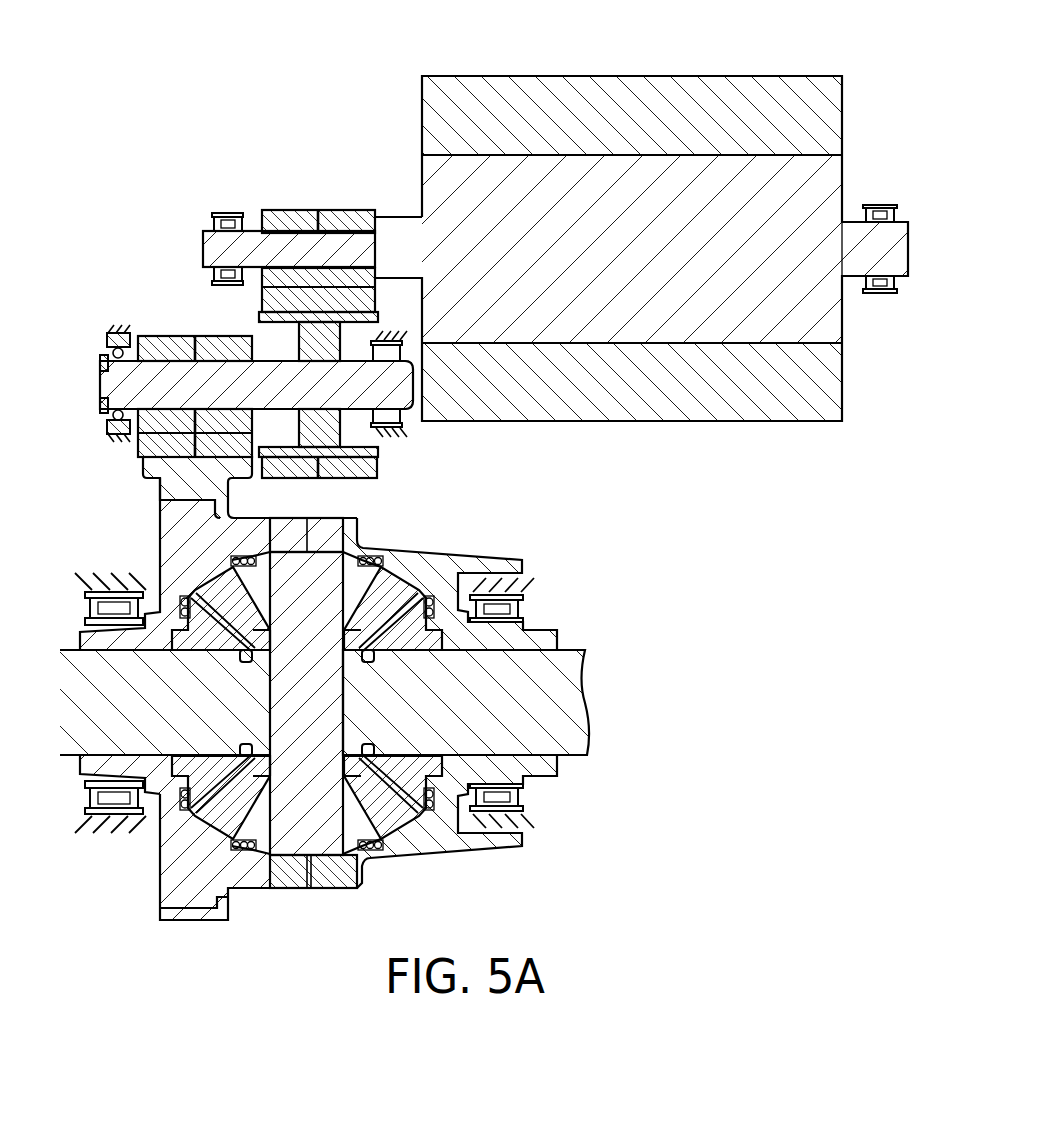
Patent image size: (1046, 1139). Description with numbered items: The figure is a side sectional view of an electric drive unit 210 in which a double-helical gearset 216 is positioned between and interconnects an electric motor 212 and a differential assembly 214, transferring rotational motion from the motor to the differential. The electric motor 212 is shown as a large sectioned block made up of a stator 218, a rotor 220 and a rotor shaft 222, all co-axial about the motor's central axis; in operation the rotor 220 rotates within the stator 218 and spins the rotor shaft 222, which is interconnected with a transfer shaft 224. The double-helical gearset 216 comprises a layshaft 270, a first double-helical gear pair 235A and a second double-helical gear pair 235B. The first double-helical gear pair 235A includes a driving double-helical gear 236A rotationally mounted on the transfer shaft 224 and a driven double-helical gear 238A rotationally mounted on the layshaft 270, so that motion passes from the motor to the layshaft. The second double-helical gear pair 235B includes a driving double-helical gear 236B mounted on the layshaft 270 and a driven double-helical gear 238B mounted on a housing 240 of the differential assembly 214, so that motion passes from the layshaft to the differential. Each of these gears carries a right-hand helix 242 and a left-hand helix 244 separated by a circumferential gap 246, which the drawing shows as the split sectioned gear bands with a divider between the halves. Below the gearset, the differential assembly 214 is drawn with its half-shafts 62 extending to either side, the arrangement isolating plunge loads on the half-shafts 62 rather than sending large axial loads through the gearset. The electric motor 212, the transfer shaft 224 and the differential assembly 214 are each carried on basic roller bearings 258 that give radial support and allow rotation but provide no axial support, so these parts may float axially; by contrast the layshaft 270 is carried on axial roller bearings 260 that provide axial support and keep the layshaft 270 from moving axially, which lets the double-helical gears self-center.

The half-shafts 62 is at (125, 735).
The electric drive unit 210 is at (780, 765).
The electric motor 212 is at (650, 425).
The differential assembly 214 is at (366, 885).
The double-helical gearset 216 is at (88, 386).
The stator 218 is at (608, 98).
The rotor 220 is at (838, 186).
The rotor shaft 222 is at (292, 247).
The transfer shaft 224 is at (292, 247).
The first double-helical gear pair 235A is at (327, 200).
The second double-helical gear pair 235B is at (206, 328).
The driving double-helical gear 236A is at (340, 222).
The driving double-helical gear 236B is at (240, 290).
The driven double-helical gear 238A is at (367, 477).
The driven double-helical gear 238B is at (140, 446).
The housing 240 is at (180, 538).
The right-hand helix 242 is at (357, 222).
The left-hand helix 244 is at (293, 222).
The gap 246 is at (316, 220).
The basic roller bearings 258 is at (224, 213).
The axial roller bearings 260 is at (118, 420).
The layshaft 270 is at (140, 385).